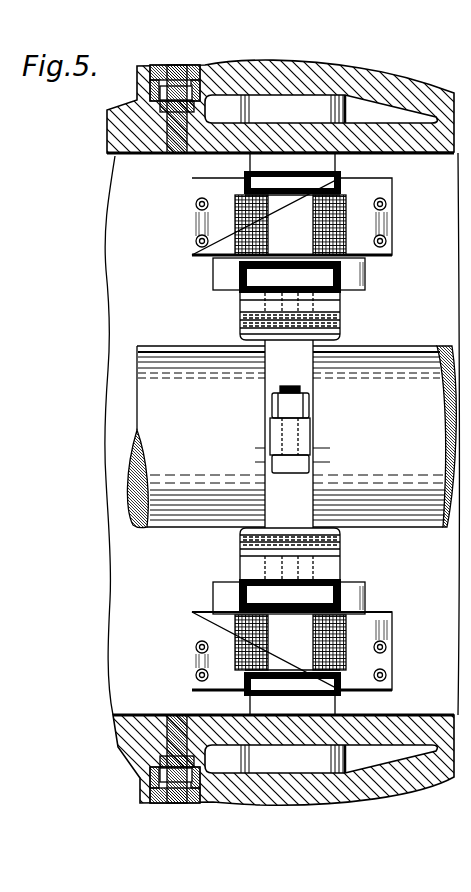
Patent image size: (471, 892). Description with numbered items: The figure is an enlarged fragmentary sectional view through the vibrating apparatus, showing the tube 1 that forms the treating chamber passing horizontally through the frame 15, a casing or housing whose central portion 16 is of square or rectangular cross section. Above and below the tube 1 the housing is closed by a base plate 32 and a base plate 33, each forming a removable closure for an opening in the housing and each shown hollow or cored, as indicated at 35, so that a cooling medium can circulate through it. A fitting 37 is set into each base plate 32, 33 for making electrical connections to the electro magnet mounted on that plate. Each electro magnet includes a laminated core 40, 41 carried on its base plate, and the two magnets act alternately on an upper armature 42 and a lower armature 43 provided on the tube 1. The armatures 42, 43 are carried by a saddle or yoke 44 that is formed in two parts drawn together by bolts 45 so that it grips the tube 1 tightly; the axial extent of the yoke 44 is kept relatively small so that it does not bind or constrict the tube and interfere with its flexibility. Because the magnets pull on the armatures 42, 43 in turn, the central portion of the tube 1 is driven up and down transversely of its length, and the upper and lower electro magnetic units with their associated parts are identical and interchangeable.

The tube 1 is at (176, 508).
The frame 15 is at (0, 146).
The central portion 16 is at (11, 196).
The base plate 32 is at (323, 50).
The base plate 33 is at (425, 773).
The hollow or cored portion 35 is at (390, 109).
The fitting 37 is at (178, 66).
The laminated core 40 is at (215, 187).
The laminated core 41 is at (212, 624).
The armature 42 is at (218, 274).
The armature 43 is at (228, 594).
The saddle or yoke 44 is at (284, 350).
The bolts 45 is at (280, 390).